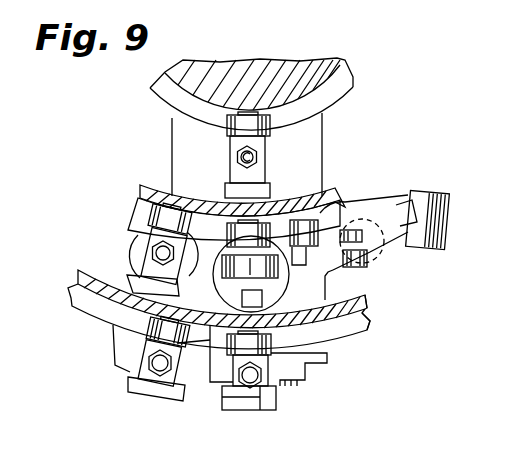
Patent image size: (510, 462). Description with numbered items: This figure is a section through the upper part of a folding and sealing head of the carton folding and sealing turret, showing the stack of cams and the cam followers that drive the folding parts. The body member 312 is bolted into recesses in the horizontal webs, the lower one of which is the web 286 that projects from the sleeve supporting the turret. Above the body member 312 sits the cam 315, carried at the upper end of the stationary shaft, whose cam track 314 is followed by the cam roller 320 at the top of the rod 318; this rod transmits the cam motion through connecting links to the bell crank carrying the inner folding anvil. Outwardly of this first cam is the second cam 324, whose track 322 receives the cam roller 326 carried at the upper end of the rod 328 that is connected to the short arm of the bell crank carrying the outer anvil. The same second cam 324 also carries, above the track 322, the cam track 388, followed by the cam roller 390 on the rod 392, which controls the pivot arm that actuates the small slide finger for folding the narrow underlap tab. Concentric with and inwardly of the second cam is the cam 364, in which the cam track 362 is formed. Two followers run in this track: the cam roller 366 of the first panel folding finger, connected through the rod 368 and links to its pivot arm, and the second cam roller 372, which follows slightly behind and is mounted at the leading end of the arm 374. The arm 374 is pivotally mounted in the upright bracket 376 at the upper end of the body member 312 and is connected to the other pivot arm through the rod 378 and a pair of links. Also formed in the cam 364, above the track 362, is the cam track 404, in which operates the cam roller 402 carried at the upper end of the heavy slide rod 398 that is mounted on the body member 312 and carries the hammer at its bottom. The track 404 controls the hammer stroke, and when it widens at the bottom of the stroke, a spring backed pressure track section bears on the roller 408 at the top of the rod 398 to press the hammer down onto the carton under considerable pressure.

The horizontal web 286 is at (322, 147).
The body member 312 is at (328, 288).
The cam track 314 is at (340, 78).
The cam 315 is at (238, 73).
The rod 318 is at (265, 143).
The cam roller 320 is at (270, 117).
The cam track 322 is at (346, 331).
The second cam 324 is at (78, 278).
The cam roller 326 is at (273, 339).
The rod 328 is at (258, 411).
The cam track 362 is at (136, 201).
The cam 364 is at (230, 182).
The cam roller 366 is at (148, 225).
The rod 368 is at (147, 252).
The second cam roller 372 is at (360, 183).
The arm 374 is at (391, 230).
The upright bracket 376 is at (447, 194).
The rod 378 is at (397, 267).
The cam track 388 is at (120, 322).
The cam roller 390 is at (167, 332).
The rod 392 is at (137, 373).
The slide rod 398 is at (272, 300).
The cam roller 402 is at (270, 207).
The cam track 404 is at (216, 222).
The roller 408 is at (242, 278).